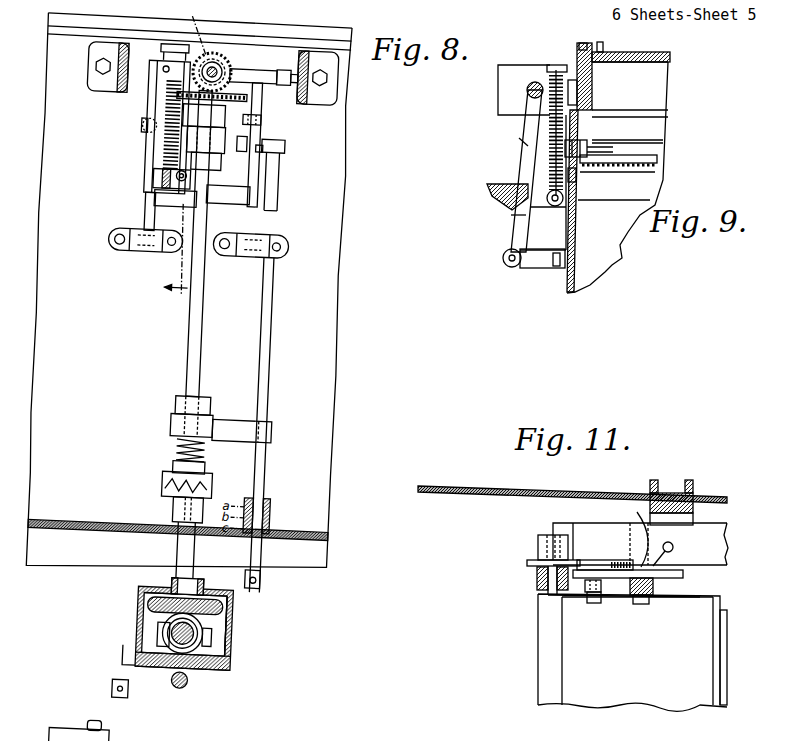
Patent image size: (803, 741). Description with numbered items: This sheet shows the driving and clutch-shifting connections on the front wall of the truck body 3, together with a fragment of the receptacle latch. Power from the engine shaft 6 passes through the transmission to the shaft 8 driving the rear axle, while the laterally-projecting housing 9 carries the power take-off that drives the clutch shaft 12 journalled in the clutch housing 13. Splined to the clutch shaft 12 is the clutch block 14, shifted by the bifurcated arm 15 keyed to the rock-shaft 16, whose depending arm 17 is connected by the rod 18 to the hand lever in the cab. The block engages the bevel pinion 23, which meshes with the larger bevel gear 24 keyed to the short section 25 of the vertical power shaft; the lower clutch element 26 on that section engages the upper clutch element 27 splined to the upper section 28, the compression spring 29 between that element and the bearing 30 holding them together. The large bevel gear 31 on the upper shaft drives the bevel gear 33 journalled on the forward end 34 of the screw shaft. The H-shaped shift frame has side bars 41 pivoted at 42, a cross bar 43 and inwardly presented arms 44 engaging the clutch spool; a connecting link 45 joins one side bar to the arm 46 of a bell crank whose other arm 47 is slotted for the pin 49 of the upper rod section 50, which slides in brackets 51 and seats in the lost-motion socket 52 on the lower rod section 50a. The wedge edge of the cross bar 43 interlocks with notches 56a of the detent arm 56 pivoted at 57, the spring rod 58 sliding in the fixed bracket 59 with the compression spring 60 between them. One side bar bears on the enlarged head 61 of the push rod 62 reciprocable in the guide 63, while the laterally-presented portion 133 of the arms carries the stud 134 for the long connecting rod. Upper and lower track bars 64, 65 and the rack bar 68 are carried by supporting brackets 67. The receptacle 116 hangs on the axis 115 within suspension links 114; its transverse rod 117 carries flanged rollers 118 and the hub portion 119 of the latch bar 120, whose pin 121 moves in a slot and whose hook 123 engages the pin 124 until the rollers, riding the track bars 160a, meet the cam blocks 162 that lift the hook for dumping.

In FIG. 8, the truck body 3 is at (48, 267).
In FIG. 9, the truck body 3 is at (601, 274).
In FIG. 11, the truck body 3 is at (486, 487).
In FIG. 8, the engine shaft 6 is at (206, 689).
In FIG. 8, the shaft 8 is at (120, 729).
In FIG. 8, the laterally-projecting housing 9 is at (190, 17).
In FIG. 8, the clutch shaft 12 is at (228, 633).
In FIG. 8, the clutch housing 13 is at (256, 604).
In FIG. 8, the clutch block 14 is at (183, 616).
In FIG. 8, the bifurcated arm 15 is at (182, 632).
In FIG. 8, the rock-shaft 16 is at (255, 668).
In FIG. 8, the depending arm 17 is at (148, 652).
In FIG. 8, the rod 18 is at (139, 693).
In FIG. 8, the bevel pinion 23 is at (246, 621).
In FIG. 8, the bevel gear 24 is at (172, 603).
In FIG. 8, the short section of vertical power shaft 25 is at (198, 553).
In FIG. 8, the lower clutch element 26 is at (186, 492).
In FIG. 8, the upper clutch element 27 is at (190, 474).
In FIG. 8, the upper section of vertical power shaft 28 is at (200, 353).
In FIG. 8, the compression spring 29 is at (222, 450).
In FIG. 8, the bearing 30 is at (190, 421).
In FIG. 8, the large bevel gear 31 is at (249, 98).
In FIG. 8, the bevel gear 33 is at (214, 52).
In FIG. 8, the forward end of screw shaft 34 is at (217, 69).
In FIG. 8, the side bars 41 is at (149, 158).
In FIG. 9, the side bars 41 is at (519, 167).
In FIG. 8, the pivot 42 is at (131, 254).
In FIG. 9, the pivot 42 is at (511, 268).
In FIG. 8, the cross bar 43 is at (250, 197).
In FIG. 9, the cross bar 43 is at (515, 213).
In FIG. 8, the inwardly presented arms 44 is at (250, 68).
In FIG. 9, the inwardly presented arms 44 is at (527, 92).
In FIG. 8, the connecting link 45 is at (264, 118).
In FIG. 8, the arm of bell crank lever 46 is at (251, 138).
In FIG. 8, the arm of bell crank lever 47 is at (289, 144).
In FIG. 8, the pin 49 is at (262, 150).
In FIG. 8, the upper rod section 50 is at (283, 342).
In FIG. 8, the lower rod section 50a is at (283, 554).
In FIG. 8, the brackets 51 is at (286, 248).
In FIG. 8, the lost-motion coupling or socket 52 is at (289, 512).
In FIG. 8, the detent arm 56 is at (166, 184).
In FIG. 9, the detent arm 56 is at (540, 210).
In FIG. 9, the notches 56a is at (490, 186).
In FIG. 8, the pivot 57 is at (160, 178).
In FIG. 9, the pivot 57 is at (564, 201).
In FIG. 8, the spring rod 58 is at (172, 46).
In FIG. 9, the spring rod 58 is at (565, 65).
In FIG. 8, the fixed bracket 59 is at (90, 54).
In FIG. 9, the fixed bracket 59 is at (552, 65).
In FIG. 8, the compression spring 60 is at (180, 118).
In FIG. 9, the compression spring 60 is at (578, 103).
In FIG. 8, the enlarged head 61 is at (148, 128).
In FIG. 9, the enlarged head 61 is at (520, 142).
In FIG. 8, the push rod 62 is at (146, 135).
In FIG. 9, the push rod 62 is at (570, 175).
In FIG. 9, the guide 63 is at (586, 142).
In FIG. 9, the upper track bars 64 is at (668, 117).
In FIG. 9, the lower track bars 65 is at (658, 158).
In FIG. 11, the supporting brackets 67 is at (694, 518).
In FIG. 9, the rack bar 68 is at (658, 173).
In FIG. 11, the suspension links 114 is at (656, 592).
In FIG. 11, the axis 115 is at (643, 605).
In FIG. 11, the trough-like receptacle 116 is at (601, 698).
In FIG. 11, the transverse rod 117 is at (549, 596).
In FIG. 11, the flanged rollers 118 is at (538, 537).
In FIG. 11, the hub portion 119 is at (537, 580).
In FIG. 11, the latch bar 120 is at (601, 566).
In FIG. 11, the pin 121 is at (594, 604).
In FIG. 11, the hook 123 is at (683, 576).
In FIG. 11, the pin 124 is at (673, 547).
In FIG. 8, the laterally-presented portion 133 is at (279, 67).
In FIG. 8, the stud 134 is at (304, 84).
In FIG. 11, the track bars 160a is at (727, 548).
In FIG. 11, the cam blocks 162 is at (637, 514).